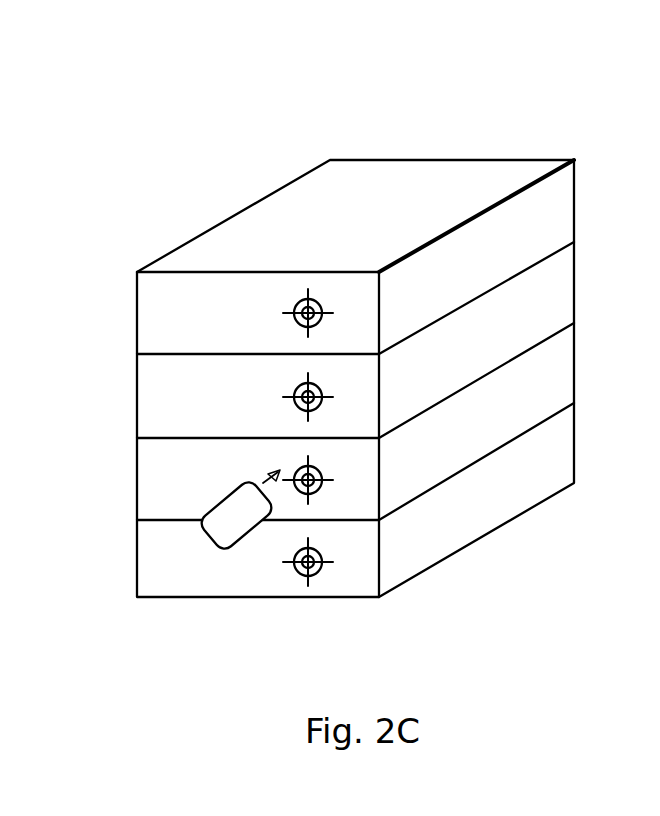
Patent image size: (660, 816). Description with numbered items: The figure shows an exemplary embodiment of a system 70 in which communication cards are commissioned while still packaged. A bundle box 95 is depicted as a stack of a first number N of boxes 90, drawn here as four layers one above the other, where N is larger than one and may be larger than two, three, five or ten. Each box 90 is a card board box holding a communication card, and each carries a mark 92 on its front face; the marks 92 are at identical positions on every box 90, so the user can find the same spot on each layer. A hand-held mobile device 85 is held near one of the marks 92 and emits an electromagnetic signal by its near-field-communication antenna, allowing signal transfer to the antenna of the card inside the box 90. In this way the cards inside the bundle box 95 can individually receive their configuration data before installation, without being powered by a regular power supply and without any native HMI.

The system 70 is at (363, 615).
The bundle box 95 is at (452, 148).
The box 90 is at (470, 533).
The mark 92 is at (318, 552).
The mobile device 85 is at (238, 548).